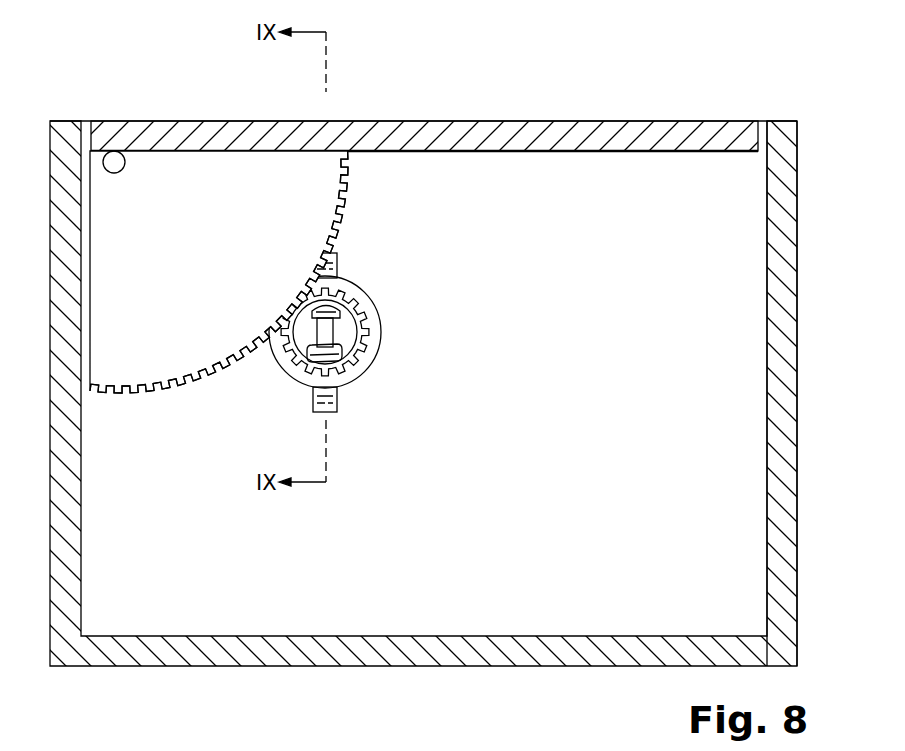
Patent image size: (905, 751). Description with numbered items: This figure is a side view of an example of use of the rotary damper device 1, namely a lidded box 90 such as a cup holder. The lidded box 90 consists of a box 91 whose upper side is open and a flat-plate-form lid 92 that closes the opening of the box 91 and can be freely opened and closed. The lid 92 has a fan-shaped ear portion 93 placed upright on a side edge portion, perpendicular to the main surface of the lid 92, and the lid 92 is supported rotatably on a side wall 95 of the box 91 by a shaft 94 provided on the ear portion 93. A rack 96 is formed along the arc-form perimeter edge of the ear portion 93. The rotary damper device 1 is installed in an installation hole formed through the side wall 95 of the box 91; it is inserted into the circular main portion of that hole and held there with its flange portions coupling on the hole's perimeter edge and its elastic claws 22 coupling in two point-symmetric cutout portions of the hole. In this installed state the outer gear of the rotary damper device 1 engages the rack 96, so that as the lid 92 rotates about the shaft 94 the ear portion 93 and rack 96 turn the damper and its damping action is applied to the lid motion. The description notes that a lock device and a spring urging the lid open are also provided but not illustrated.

The rotary damper device 1 is at (374, 294).
The elastic claw 22 is at (338, 262).
The lidded box 90 is at (660, 121).
The box 91 is at (790, 228).
The lid 92 is at (600, 132).
The ear portion 93 is at (228, 180).
The shaft 94 is at (115, 160).
The side wall 95 is at (469, 178).
The rack 96 is at (152, 393).